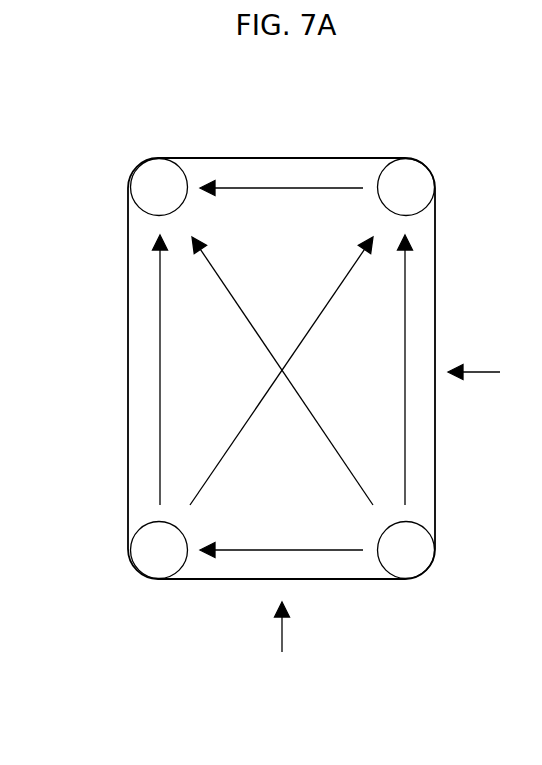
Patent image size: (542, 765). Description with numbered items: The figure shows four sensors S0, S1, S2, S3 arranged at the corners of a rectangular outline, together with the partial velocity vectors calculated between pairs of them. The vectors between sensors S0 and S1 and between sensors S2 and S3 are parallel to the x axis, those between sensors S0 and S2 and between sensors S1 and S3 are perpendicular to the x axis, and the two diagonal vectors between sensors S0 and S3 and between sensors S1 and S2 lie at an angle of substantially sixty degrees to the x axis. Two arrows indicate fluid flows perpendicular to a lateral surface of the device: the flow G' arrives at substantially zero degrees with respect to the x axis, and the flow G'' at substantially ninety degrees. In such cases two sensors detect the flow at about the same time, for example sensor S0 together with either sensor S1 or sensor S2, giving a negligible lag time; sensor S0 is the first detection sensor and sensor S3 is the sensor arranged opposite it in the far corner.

The sensor S0 is at (403, 555).
The sensor S1 is at (152, 558).
The sensor S2 is at (408, 175).
The sensor S3 is at (152, 175).
The fluid flow G' is at (488, 372).
The fluid flow G'' is at (285, 642).